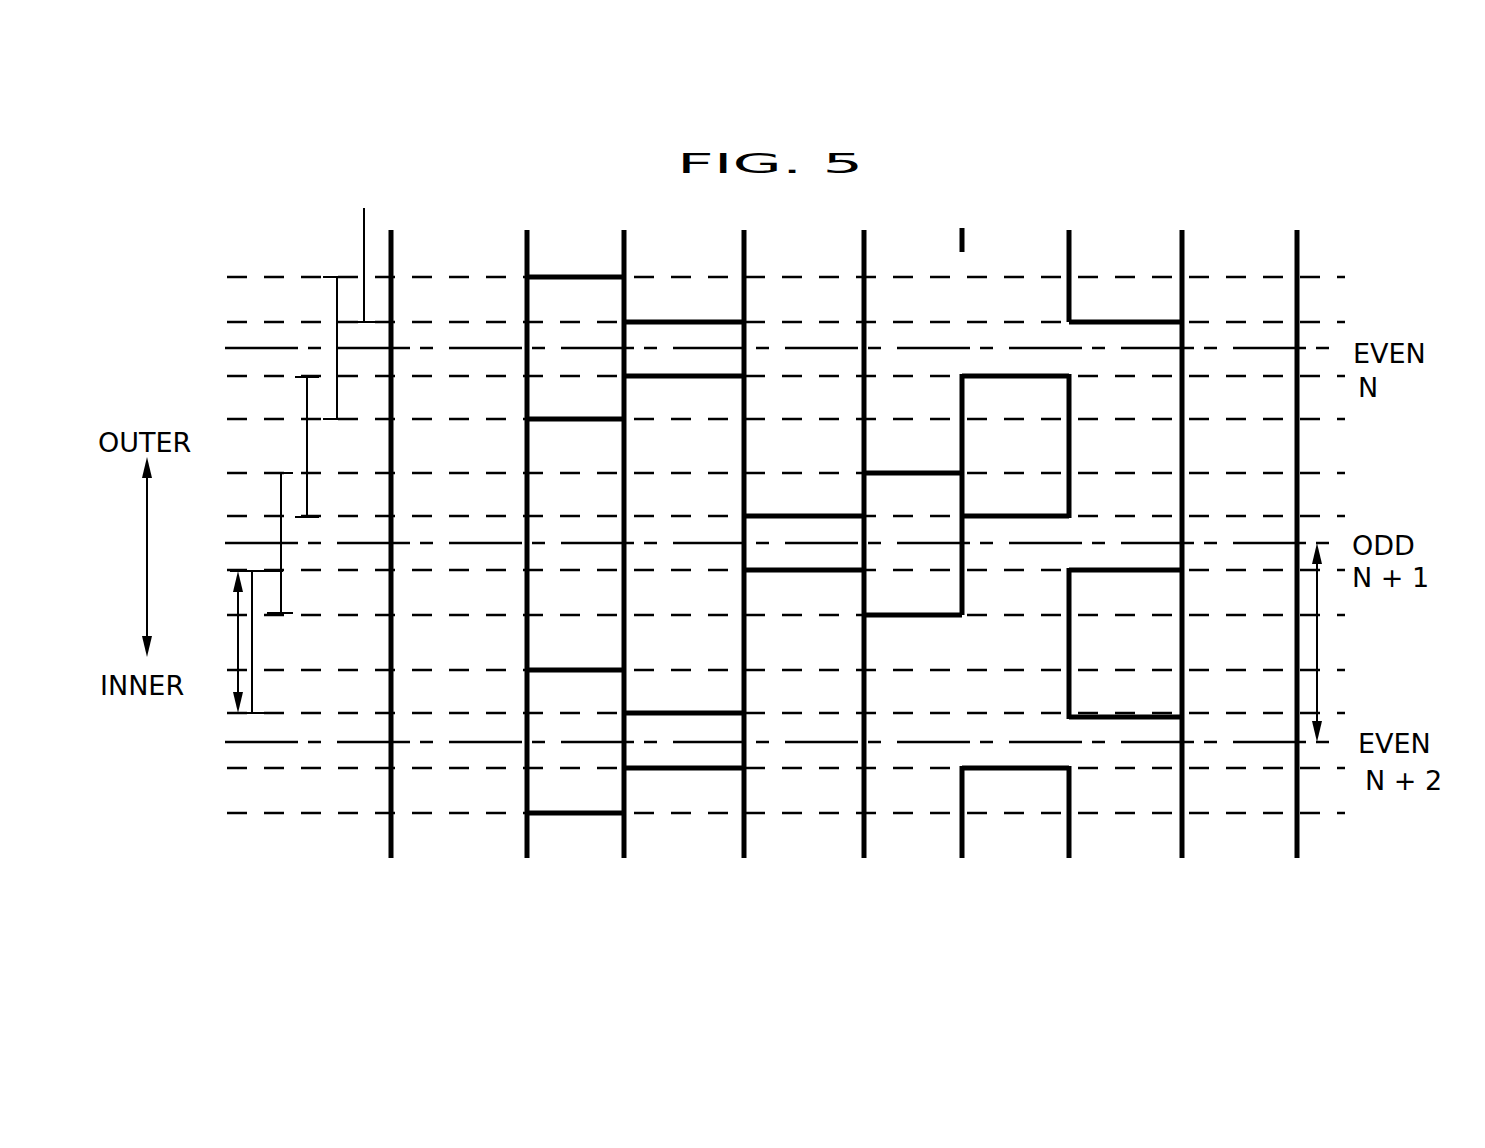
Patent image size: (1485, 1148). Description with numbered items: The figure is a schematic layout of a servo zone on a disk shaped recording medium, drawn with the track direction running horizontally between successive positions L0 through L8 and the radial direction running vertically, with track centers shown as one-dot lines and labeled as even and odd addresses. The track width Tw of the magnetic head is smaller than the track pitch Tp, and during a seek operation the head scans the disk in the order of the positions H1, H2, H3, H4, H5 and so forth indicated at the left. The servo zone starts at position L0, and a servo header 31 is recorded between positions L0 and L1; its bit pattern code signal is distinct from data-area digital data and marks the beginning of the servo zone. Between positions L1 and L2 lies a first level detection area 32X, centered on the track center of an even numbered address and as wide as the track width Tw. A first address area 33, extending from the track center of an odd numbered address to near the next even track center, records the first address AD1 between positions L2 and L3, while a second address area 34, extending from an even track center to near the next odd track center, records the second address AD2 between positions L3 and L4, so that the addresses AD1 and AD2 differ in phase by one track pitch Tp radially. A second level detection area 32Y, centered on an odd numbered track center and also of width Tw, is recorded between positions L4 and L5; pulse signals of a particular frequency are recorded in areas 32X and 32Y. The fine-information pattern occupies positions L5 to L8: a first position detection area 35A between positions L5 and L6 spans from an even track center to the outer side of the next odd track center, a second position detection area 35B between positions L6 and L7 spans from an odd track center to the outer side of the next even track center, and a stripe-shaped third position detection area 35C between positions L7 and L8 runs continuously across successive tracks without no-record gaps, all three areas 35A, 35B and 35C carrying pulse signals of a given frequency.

The servo header 31 is at (452, 497).
The first level detection area 32X is at (575, 545).
The second level detection area 32Y is at (913, 494).
The first address area 33 is at (684, 527).
The second address area 34 is at (804, 551).
The first position detection area 35A is at (1015, 616).
The second position detection area 35B is at (1125, 474).
The third position detection area 35C is at (1234, 498).
The first address AD1 is at (680, 573).
The second address AD2 is at (800, 600).
The head scanning position H1 is at (364, 250).
The head scanning position H2 is at (337, 306).
The head scanning position H3 is at (307, 444).
The head scanning position H4 is at (281, 497).
The head scanning position H5 is at (253, 650).
The track width Tw is at (222, 642).
The track pitch Tp is at (1317, 652).
The position L0 is at (394, 212).
The position L1 is at (526, 212).
The position L2 is at (619, 212).
The position L3 is at (741, 212).
The position L4 is at (861, 212).
The position L5 is at (964, 211).
The position L6 is at (1073, 212).
The position L7 is at (1181, 212).
The position L8 is at (1296, 212).